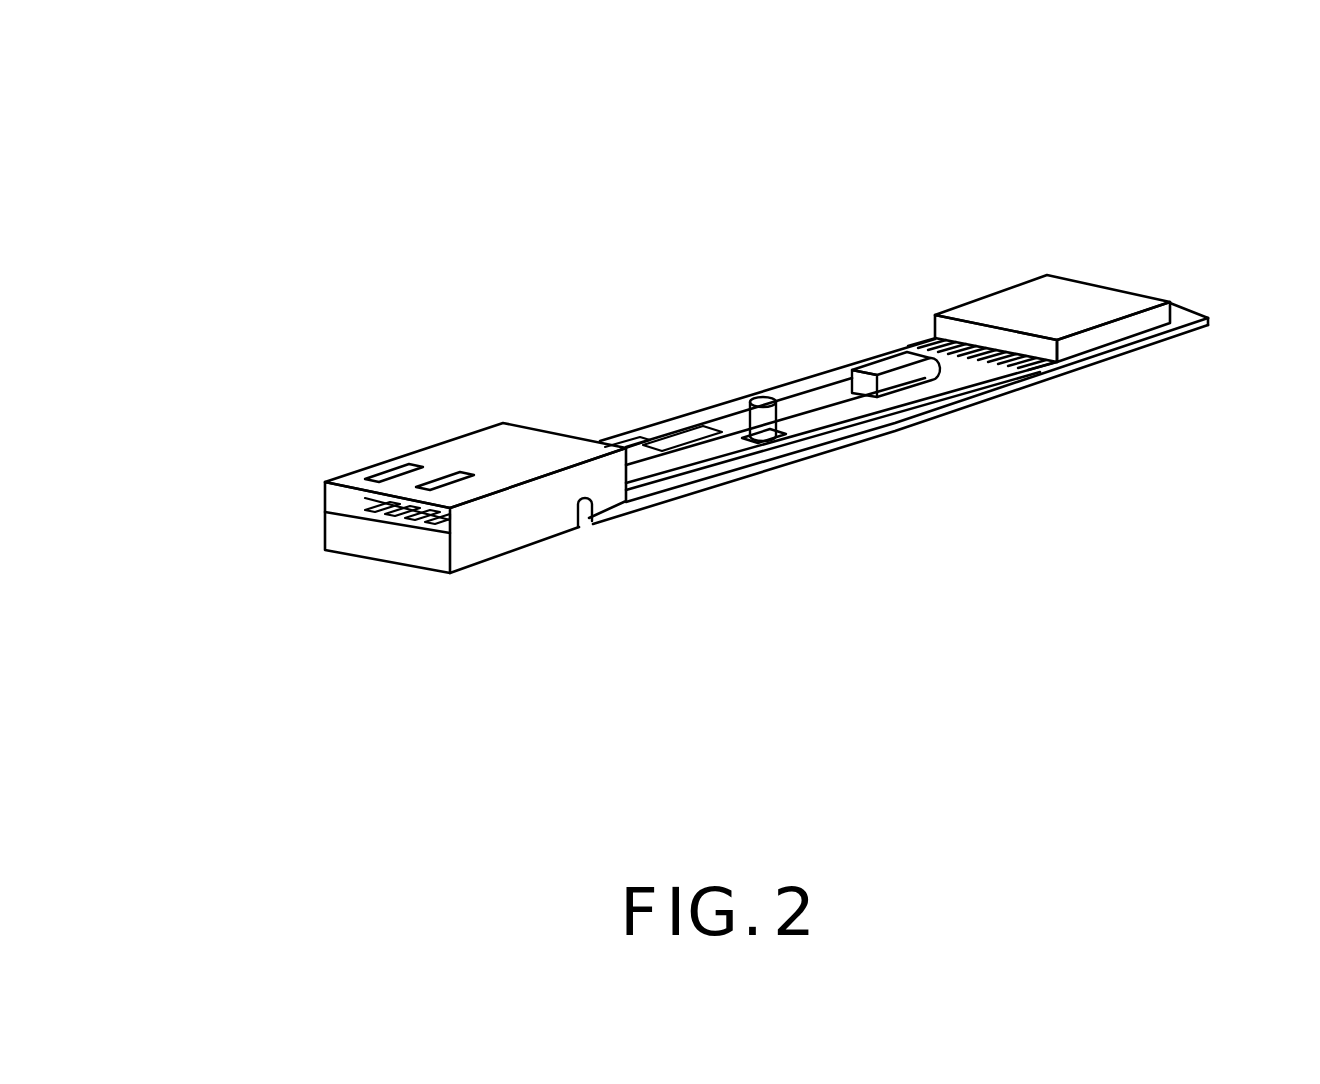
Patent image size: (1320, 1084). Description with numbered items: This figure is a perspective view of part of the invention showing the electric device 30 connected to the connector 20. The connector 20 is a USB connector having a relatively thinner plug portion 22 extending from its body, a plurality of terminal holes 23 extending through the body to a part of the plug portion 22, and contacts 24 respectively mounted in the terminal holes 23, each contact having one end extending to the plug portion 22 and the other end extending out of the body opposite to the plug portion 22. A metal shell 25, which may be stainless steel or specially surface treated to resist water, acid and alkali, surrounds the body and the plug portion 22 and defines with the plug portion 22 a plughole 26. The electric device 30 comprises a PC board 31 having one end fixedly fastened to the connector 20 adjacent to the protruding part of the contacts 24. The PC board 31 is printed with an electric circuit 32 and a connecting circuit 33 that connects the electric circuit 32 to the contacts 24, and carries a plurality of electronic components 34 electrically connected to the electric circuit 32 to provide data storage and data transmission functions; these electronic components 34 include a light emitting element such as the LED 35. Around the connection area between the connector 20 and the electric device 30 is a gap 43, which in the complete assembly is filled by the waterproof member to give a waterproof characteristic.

The connector 20 is at (372, 471).
The plug portion 22 is at (337, 538).
The terminal holes 23 is at (403, 513).
The contacts 24 is at (428, 515).
The metal shell 25 is at (445, 457).
The plughole 26 is at (372, 507).
The electric device 30 is at (918, 340).
The PC board 31 is at (893, 481).
The electric circuit 32 is at (805, 390).
The connecting circuit 33 is at (668, 430).
The electronic components 34 is at (1085, 345).
The LED 35 is at (905, 378).
The gap 43 is at (593, 522).